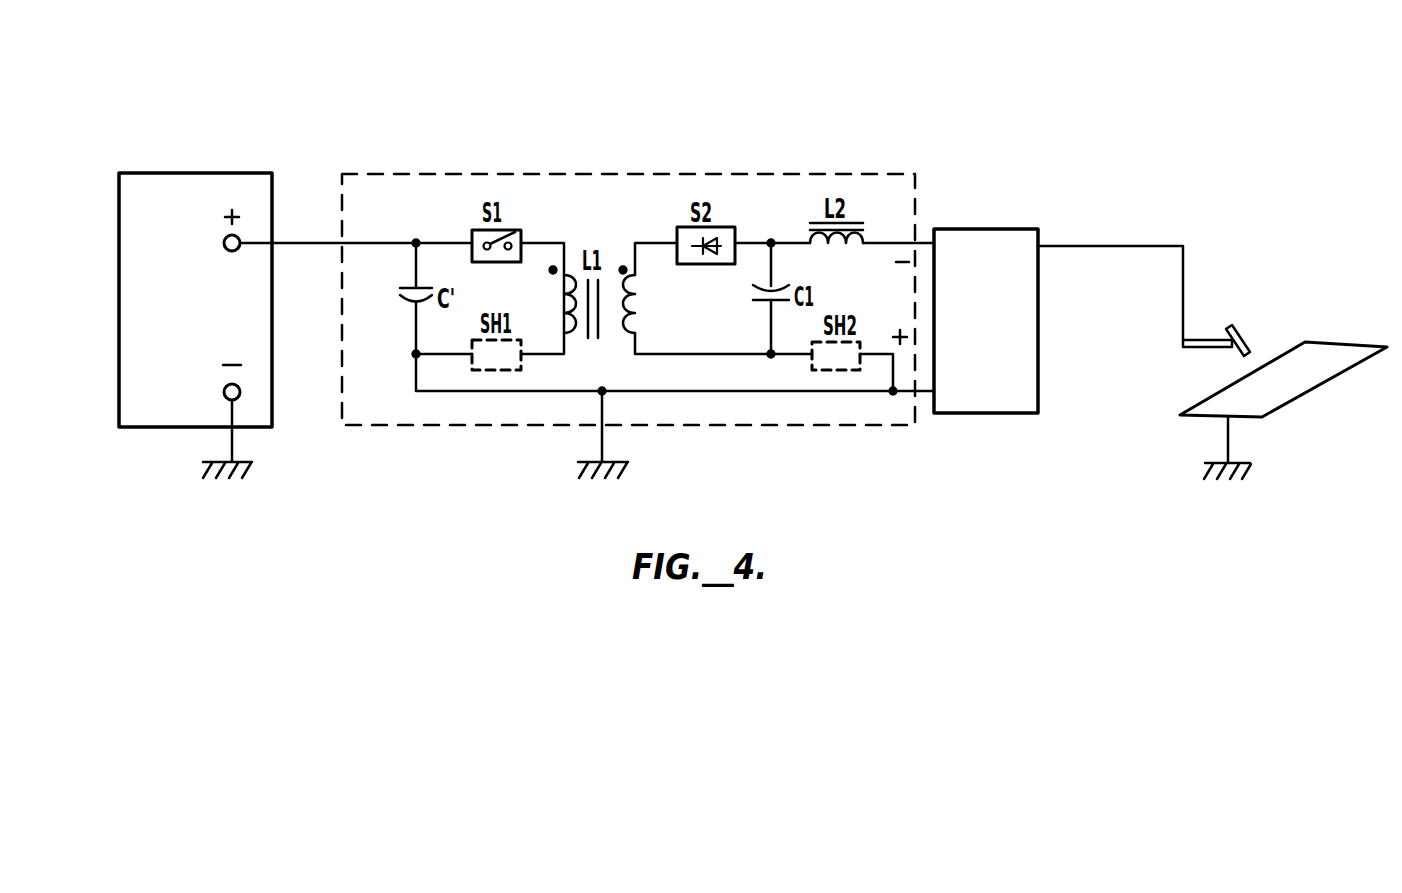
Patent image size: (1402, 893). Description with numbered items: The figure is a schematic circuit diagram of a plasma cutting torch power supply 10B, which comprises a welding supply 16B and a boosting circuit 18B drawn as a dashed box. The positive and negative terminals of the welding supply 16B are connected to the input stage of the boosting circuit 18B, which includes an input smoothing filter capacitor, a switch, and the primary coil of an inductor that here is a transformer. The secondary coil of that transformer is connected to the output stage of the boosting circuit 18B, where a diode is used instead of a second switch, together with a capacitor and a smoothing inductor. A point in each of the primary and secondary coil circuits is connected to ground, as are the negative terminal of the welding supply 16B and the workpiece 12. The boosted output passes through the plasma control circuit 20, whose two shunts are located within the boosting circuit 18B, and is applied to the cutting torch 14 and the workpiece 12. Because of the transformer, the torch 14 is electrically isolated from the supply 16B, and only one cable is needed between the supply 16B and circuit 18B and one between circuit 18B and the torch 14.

The power supply 10B is at (275, 58).
The workpiece 12 is at (1193, 418).
The cutting torch 14 is at (1207, 335).
The welding supply 16B is at (243, 173).
The boosting circuit 18B is at (777, 174).
The plasma control circuit 20 is at (1020, 229).